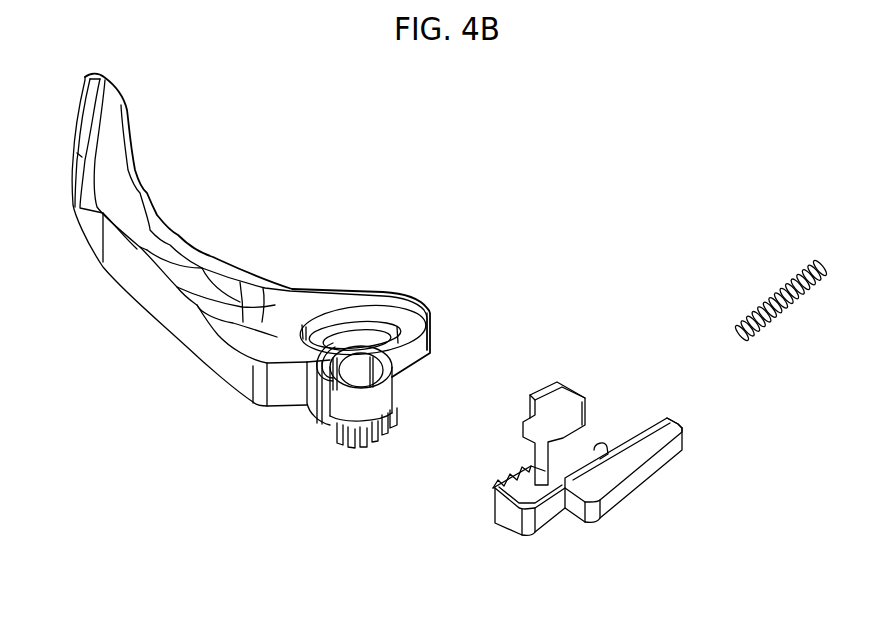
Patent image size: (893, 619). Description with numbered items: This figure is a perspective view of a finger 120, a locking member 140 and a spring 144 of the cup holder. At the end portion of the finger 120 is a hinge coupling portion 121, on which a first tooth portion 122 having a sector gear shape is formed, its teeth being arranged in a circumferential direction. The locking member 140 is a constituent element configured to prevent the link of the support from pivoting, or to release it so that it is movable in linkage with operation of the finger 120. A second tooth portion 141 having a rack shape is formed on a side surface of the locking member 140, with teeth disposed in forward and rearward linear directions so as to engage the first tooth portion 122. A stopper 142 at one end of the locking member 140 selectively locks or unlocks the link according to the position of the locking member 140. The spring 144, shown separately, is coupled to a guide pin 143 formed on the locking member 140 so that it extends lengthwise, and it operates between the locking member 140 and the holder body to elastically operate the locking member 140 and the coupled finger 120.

The finger 120 is at (228, 266).
The hinge coupling portion 121 is at (334, 442).
The first tooth portion 122 is at (353, 410).
The locking member 140 is at (637, 488).
The second tooth portion 141 is at (510, 474).
The stopper 142 is at (583, 407).
The guide pin 143 is at (598, 446).
The spring 144 is at (775, 293).